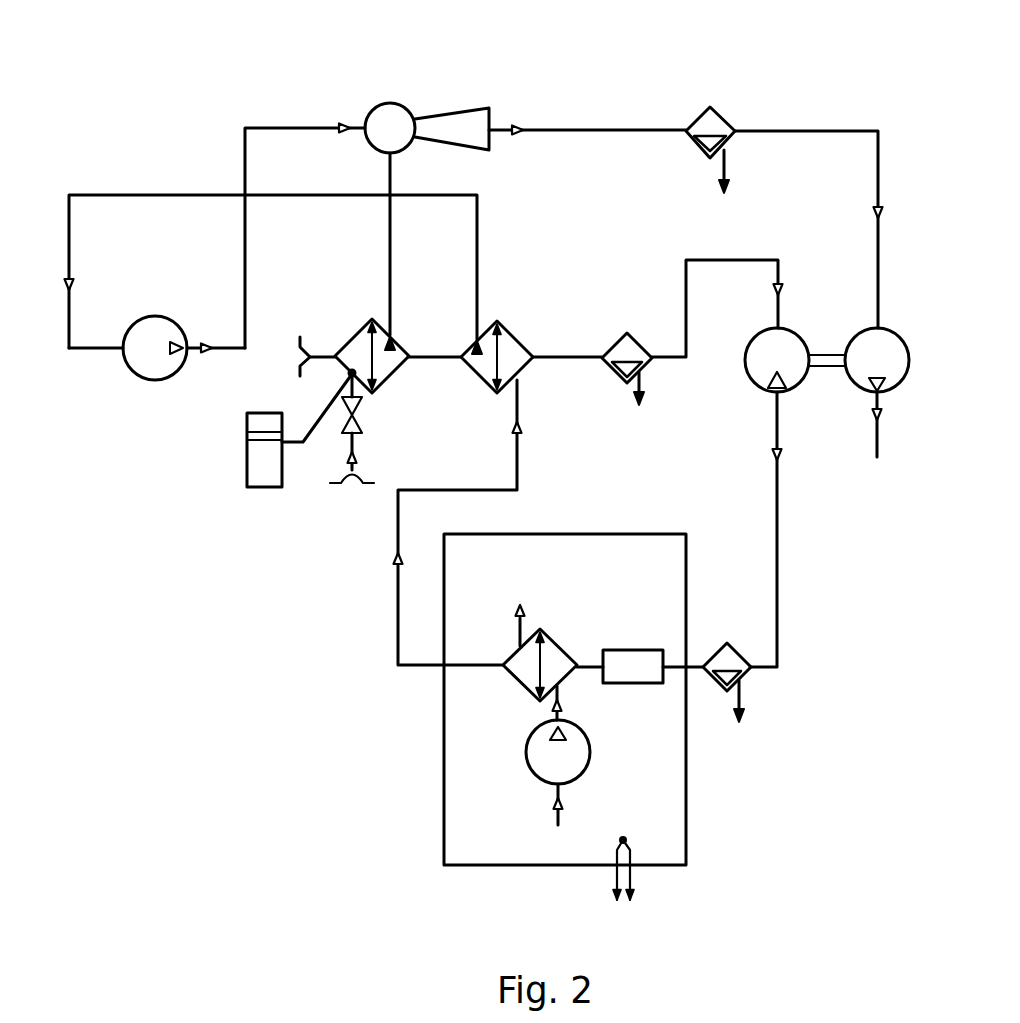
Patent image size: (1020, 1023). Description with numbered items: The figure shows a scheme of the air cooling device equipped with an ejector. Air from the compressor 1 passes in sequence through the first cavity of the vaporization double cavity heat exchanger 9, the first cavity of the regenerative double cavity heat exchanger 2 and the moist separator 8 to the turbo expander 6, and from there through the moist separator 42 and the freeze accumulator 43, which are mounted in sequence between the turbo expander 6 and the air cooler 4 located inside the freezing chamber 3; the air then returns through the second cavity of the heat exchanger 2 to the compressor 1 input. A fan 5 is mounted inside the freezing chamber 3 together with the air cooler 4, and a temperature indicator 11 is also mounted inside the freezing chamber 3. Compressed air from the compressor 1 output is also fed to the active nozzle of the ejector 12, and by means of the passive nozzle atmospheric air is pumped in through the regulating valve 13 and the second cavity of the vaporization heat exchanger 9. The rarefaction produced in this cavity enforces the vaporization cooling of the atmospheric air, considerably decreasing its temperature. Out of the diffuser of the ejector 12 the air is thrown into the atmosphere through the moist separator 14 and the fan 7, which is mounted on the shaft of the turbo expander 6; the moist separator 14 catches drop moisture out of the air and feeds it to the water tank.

The compressor 1 is at (163, 330).
The regenerative double cavity heat exchanger 2 is at (508, 350).
The freezing chamber 3 is at (460, 703).
The air cooler 4 is at (555, 650).
The pump 5 is at (575, 745).
The turbo expander 6 is at (790, 343).
The fan 7 is at (880, 348).
The moist separator 8 is at (633, 345).
The double cavity heat exchanger 9 is at (395, 350).
The temperature indicator 11 is at (258, 462).
The ejector 12 is at (387, 122).
The regulated valve 13 is at (360, 425).
The moist separator 14 is at (716, 122).
The moist separator 42 is at (730, 655).
The freeze accumulator 43 is at (633, 658).